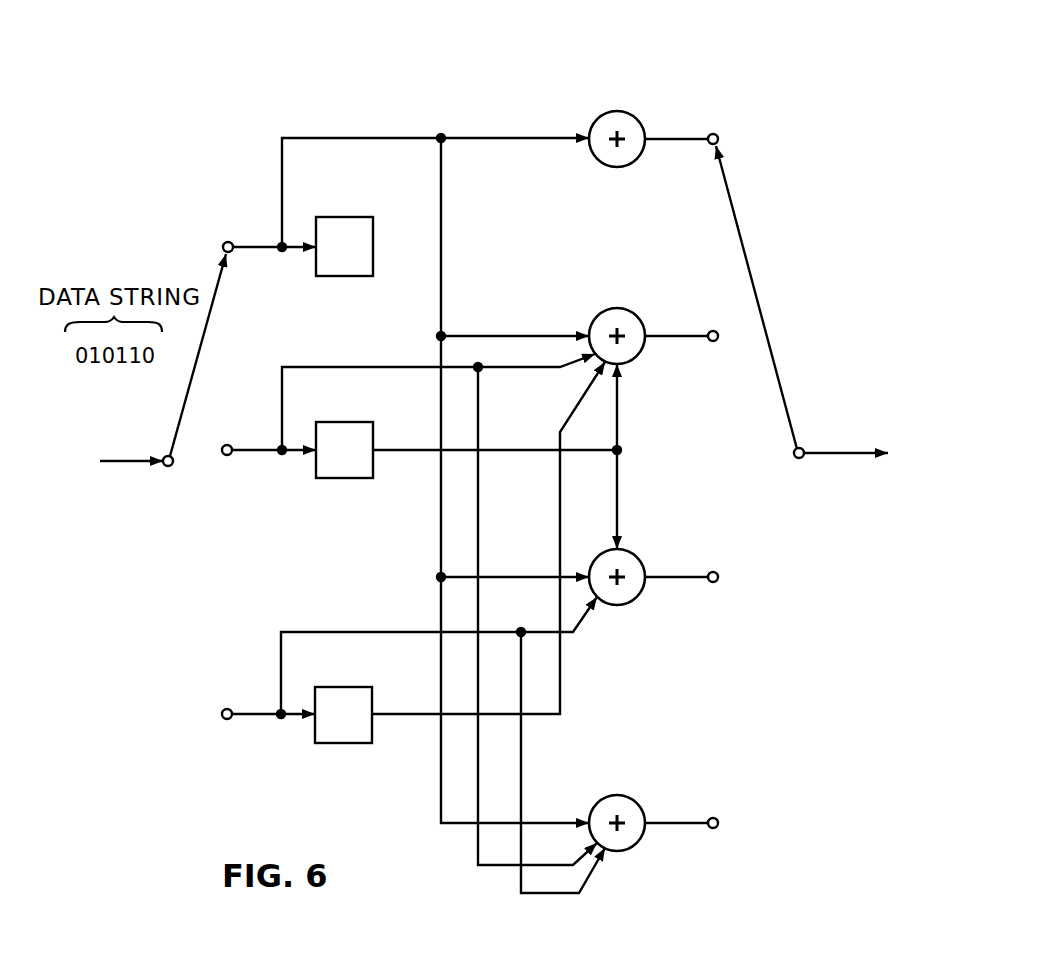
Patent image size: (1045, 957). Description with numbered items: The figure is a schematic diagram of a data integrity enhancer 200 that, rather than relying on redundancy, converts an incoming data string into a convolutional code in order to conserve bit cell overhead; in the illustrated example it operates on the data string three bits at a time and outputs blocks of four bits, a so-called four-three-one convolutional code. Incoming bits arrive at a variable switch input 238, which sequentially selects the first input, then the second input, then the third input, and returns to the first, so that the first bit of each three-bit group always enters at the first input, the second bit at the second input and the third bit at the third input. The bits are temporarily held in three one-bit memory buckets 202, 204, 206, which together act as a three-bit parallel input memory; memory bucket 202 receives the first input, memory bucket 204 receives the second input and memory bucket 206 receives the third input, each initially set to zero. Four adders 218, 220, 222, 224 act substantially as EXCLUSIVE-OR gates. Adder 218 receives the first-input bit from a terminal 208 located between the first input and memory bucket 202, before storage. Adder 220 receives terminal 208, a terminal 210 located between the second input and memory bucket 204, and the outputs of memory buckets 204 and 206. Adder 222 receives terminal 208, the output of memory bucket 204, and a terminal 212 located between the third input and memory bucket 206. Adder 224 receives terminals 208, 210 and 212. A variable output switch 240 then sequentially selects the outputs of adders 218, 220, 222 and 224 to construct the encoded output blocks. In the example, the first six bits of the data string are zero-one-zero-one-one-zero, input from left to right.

The data integrity enhancer 200 is at (334, 85).
The memory bucket 202 is at (338, 217).
The memory bucket 204 is at (346, 422).
The memory bucket 206 is at (346, 687).
The terminal 208 is at (282, 252).
The terminal 210 is at (282, 455).
The terminal 212 is at (229, 719).
The adder 218 is at (606, 111).
The adder 220 is at (608, 308).
The adder 222 is at (638, 556).
The adder 224 is at (620, 796).
The variable switch input 238 is at (166, 466).
The variable output switch 240 is at (802, 458).